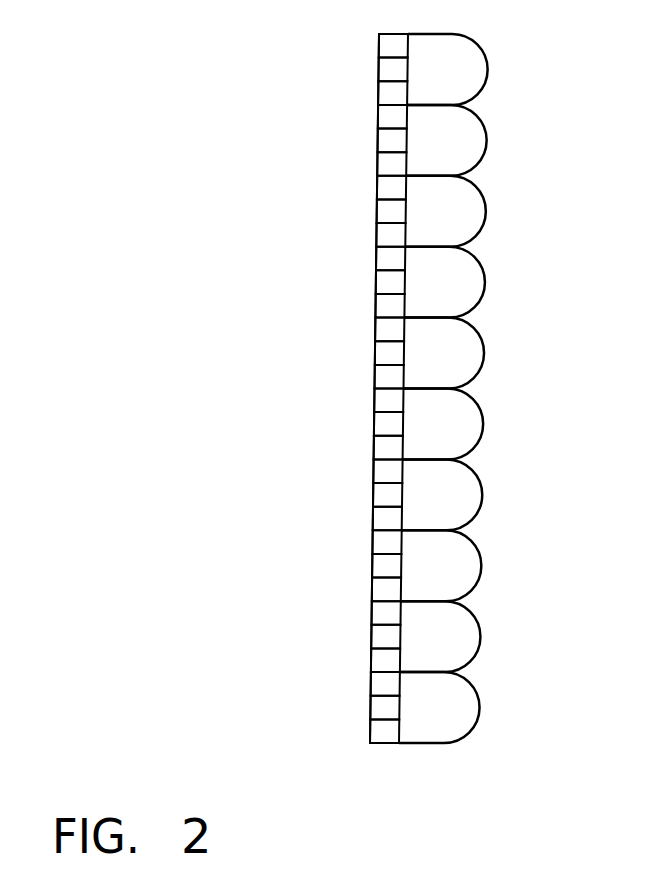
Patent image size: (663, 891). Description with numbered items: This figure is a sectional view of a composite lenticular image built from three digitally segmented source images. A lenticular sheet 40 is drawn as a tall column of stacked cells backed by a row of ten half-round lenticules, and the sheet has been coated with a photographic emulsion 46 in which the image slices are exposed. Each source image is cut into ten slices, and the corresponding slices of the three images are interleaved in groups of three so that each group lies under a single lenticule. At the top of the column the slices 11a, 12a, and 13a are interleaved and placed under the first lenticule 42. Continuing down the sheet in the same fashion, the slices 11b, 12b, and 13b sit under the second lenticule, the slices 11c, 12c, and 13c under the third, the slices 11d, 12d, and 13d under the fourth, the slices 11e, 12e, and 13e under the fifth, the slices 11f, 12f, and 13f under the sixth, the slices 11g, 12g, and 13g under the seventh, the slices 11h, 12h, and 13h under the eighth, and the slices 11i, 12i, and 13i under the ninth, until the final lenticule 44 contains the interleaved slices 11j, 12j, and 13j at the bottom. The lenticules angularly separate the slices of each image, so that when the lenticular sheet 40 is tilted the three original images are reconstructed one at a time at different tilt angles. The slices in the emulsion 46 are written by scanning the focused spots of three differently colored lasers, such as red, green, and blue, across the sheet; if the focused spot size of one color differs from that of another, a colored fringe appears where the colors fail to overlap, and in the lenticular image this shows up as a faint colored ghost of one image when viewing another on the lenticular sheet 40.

The lenticular sheet 40 is at (492, 765).
The first lenticule 42 is at (488, 68).
The final lenticule 44 is at (480, 633).
The photographic emulsion 46 is at (385, 743).
The slice 11a is at (361, 44).
The slice 12a is at (361, 68).
The slice 13a is at (360, 92).
The slice 11b is at (360, 115).
The slice 12b is at (360, 139).
The slice 13b is at (359, 163).
The slice 11c is at (359, 186).
The slice 12c is at (359, 210).
The slice 13c is at (358, 233).
The slice 11d is at (358, 257).
The slice 12d is at (358, 281).
The slice 13d is at (358, 304).
The slice 11e is at (357, 328).
The slice 12e is at (357, 352).
The slice 13e is at (357, 375).
The slice 11f is at (356, 399).
The slice 12f is at (356, 422).
The slice 13f is at (356, 446).
The slice 11g is at (355, 470).
The slice 12g is at (355, 493).
The slice 13g is at (355, 517).
The slice 11h is at (355, 541).
The slice 12h is at (354, 564).
The slice 13h is at (354, 588).
The slice 11i is at (354, 612).
The slice 12i is at (353, 635).
The slice 13i is at (353, 659).
The slice 11j is at (353, 682).
The slice 12j is at (352, 706).
The slice 13j is at (352, 730).